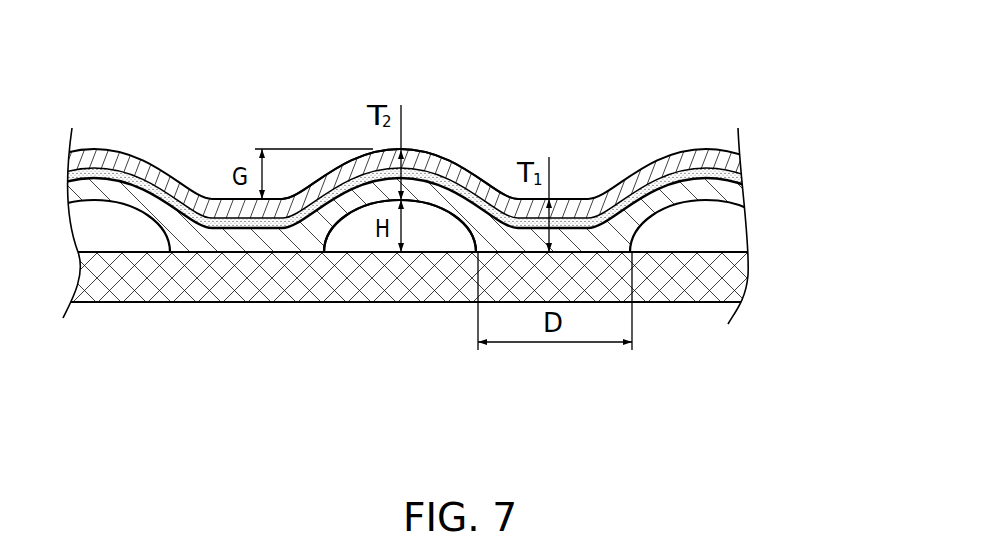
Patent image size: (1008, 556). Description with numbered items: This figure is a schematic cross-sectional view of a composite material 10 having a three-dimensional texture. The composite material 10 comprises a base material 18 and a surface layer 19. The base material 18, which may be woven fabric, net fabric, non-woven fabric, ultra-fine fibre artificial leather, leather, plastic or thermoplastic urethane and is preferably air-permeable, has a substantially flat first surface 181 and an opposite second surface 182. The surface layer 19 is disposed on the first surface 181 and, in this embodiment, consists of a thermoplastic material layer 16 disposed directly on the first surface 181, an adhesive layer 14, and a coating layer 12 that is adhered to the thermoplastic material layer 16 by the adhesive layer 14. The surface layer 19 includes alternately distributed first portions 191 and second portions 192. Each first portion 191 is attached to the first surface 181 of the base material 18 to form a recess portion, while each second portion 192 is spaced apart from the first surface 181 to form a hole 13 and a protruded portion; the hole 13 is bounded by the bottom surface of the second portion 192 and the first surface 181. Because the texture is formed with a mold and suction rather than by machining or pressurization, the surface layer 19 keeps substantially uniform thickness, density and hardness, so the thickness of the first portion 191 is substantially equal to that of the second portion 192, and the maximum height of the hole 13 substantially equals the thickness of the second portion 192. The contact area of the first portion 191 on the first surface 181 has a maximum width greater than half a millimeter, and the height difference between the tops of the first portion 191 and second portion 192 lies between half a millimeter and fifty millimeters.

The composite material 10 is at (802, 78).
The coating layer 12 is at (732, 163).
The hole 13 is at (361, 232).
The adhesive layer 14 is at (728, 180).
The thermoplastic material layer 16 is at (722, 192).
The base material 18 is at (737, 280).
The surface layer 19 is at (828, 120).
The first surface 181 is at (730, 250).
The second surface 182 is at (728, 303).
The first portion 191 is at (574, 174).
The second portion 192 is at (351, 123).